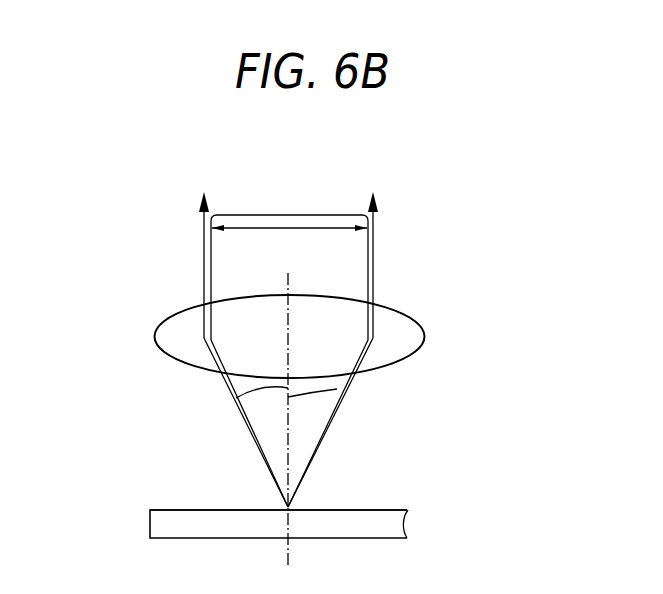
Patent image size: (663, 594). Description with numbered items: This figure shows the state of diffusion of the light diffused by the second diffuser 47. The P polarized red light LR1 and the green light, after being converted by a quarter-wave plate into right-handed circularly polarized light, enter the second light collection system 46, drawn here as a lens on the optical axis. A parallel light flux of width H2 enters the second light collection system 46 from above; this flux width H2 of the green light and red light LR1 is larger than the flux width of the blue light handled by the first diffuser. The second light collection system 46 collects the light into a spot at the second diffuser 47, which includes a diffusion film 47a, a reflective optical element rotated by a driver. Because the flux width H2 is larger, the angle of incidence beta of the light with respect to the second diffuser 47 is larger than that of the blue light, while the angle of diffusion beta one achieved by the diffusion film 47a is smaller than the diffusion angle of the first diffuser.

The second light collection system 46 is at (412, 335).
The second diffuser 47 is at (229, 539).
The diffusion film 47a is at (150, 531).
The light flux width H2 is at (283, 220).
The red light LR1 is at (324, 215).